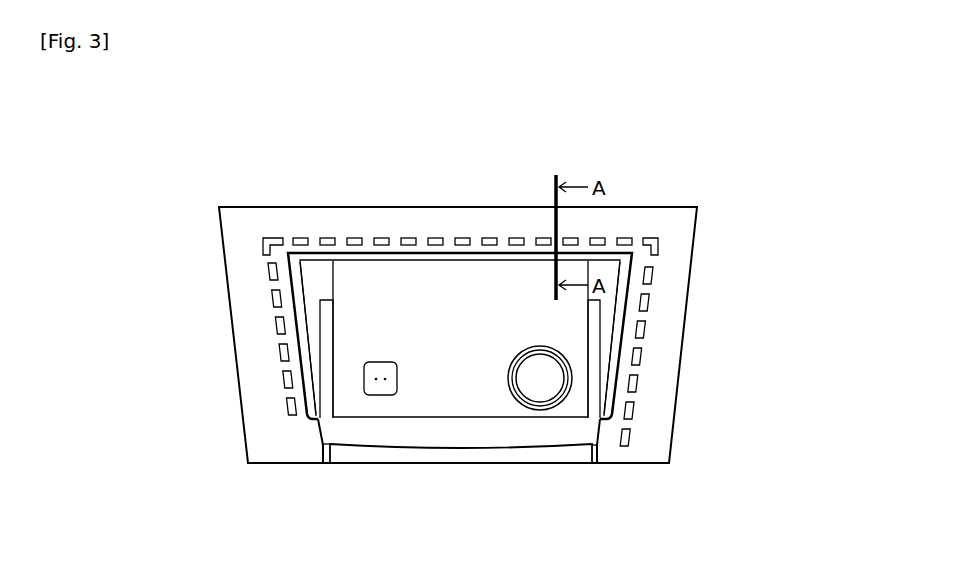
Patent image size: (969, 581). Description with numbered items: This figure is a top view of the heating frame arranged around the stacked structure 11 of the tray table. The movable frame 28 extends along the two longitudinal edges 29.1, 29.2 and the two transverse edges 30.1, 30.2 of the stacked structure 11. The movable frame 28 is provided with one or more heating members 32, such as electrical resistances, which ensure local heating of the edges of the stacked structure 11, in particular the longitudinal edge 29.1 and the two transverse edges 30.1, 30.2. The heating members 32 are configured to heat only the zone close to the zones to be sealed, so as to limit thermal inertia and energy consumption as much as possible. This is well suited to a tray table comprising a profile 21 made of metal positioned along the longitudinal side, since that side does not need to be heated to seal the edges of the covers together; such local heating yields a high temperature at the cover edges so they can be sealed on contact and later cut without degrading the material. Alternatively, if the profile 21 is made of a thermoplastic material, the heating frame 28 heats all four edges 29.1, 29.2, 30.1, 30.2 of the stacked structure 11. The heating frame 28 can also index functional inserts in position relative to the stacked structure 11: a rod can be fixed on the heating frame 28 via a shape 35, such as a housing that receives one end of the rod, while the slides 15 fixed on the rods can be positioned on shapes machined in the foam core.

The movable frame 28 is at (237, 223).
The heating member 32 is at (330, 236).
The stacked structure 11 is at (395, 287).
The longitudinal edge 29.1 is at (460, 255).
The longitudinal edge 29.2 is at (400, 447).
The transverse edge 30.1 is at (303, 345).
The transverse edge 30.2 is at (635, 355).
The slides 15 is at (323, 382).
The shape 35 is at (323, 450).
The profile 21 is at (532, 435).